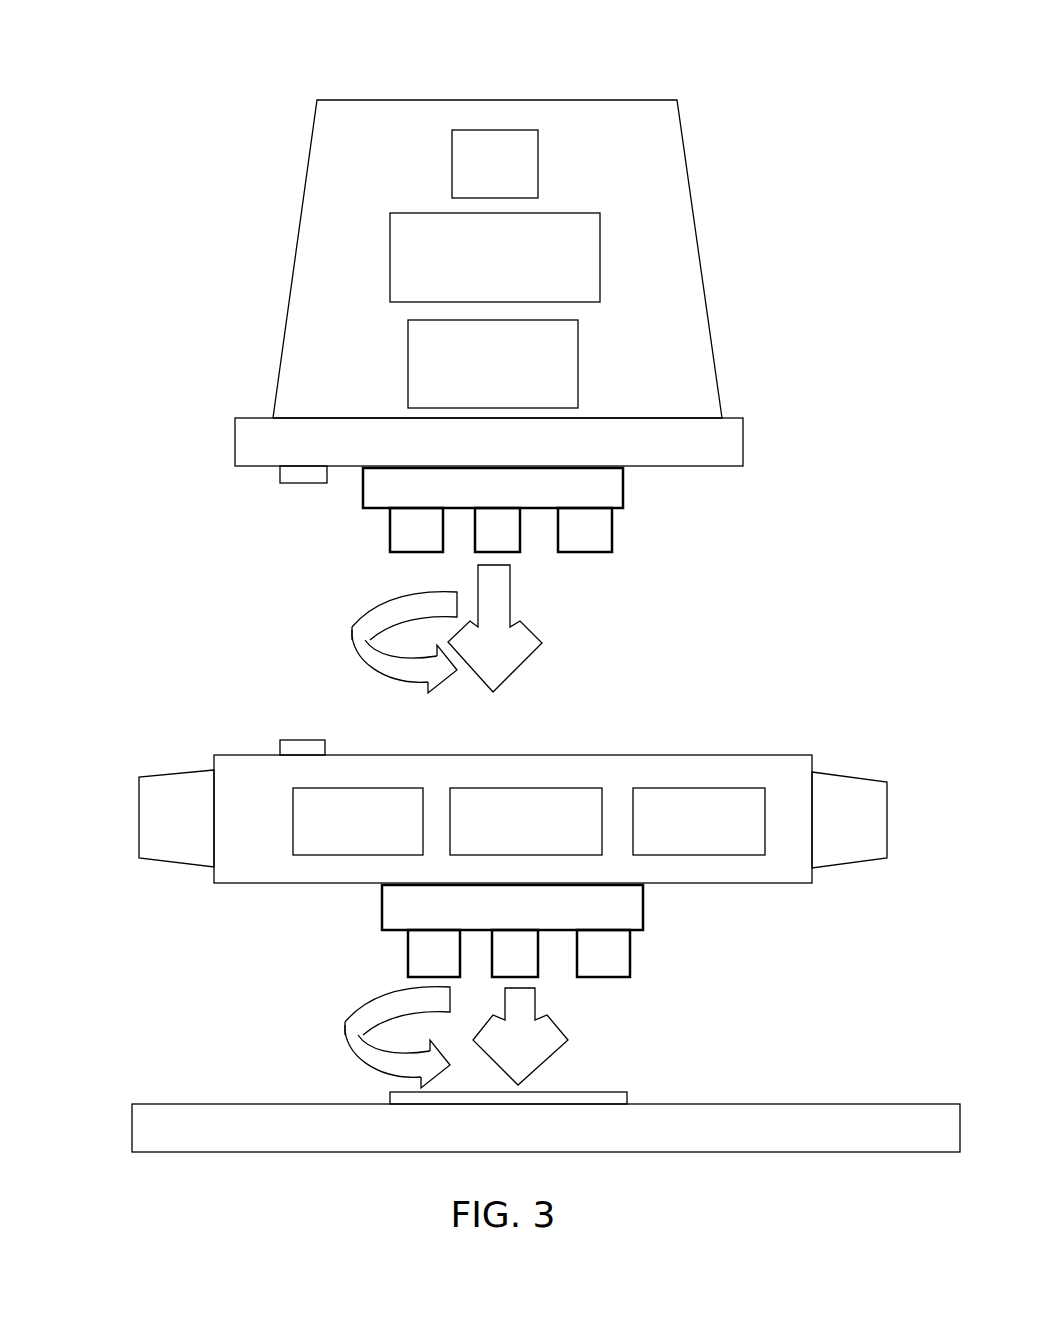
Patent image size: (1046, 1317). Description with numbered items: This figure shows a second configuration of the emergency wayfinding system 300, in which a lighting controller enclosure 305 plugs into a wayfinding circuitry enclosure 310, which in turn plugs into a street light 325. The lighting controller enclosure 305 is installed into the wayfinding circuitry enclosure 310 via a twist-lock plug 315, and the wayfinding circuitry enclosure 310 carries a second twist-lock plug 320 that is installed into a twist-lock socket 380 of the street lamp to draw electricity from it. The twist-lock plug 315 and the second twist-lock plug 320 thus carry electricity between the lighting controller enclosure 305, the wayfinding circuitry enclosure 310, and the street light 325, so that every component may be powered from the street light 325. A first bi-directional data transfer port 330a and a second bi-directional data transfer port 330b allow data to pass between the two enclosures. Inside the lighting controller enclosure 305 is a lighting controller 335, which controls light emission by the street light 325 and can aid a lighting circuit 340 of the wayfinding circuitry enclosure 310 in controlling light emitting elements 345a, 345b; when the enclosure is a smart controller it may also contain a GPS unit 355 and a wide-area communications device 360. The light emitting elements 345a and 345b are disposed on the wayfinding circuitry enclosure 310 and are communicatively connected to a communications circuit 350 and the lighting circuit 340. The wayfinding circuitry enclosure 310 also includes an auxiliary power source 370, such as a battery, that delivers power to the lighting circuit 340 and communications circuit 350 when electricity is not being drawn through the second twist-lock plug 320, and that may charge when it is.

The emergency wayfinding system 300 is at (501, 576).
The lighting controller enclosure 305 is at (551, 283).
The GPS unit 355 is at (495, 164).
The wide-area communications device 360 is at (495, 257).
The lighting controller 335 is at (493, 364).
The first bi-directional data transfer port 330a is at (303, 483).
The second bi-directional data transfer port 330b is at (303, 740).
The twist-lock plug 315 is at (612, 528).
The wayfinding circuitry enclosure 310 is at (546, 757).
The lighting circuit 340 is at (358, 821).
The communications circuit 350 is at (526, 821).
The auxiliary power source 370 is at (699, 821).
The light emitting element 345a is at (175, 862).
The light emitting element 345b is at (860, 862).
The second twist-lock plug 320 is at (630, 945).
The twist-lock socket 380 is at (607, 1092).
The street light 325 is at (670, 1104).